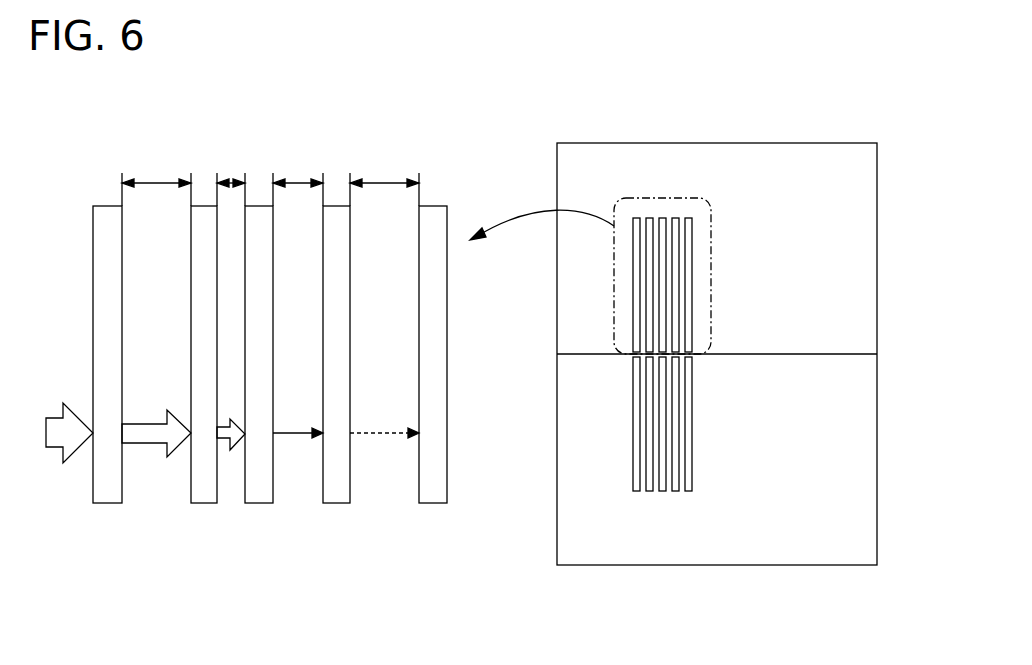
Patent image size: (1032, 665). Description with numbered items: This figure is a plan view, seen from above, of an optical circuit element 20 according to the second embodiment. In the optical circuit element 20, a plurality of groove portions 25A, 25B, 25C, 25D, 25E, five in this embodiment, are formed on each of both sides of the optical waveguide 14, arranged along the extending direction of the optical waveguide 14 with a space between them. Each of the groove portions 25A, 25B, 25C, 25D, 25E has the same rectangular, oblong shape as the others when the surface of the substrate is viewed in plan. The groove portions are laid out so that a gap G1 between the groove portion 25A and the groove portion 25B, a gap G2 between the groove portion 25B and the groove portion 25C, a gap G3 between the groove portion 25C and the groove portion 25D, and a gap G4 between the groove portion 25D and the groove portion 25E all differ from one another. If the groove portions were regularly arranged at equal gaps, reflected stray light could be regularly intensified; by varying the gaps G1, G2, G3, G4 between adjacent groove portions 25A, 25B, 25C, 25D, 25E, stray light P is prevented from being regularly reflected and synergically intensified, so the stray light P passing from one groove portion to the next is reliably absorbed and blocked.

The optical circuit element 20 is at (781, 121).
The optical waveguide 14 is at (832, 353).
The groove portion 25A is at (108, 503).
The groove portion 25B is at (204, 503).
The groove portion 25C is at (259, 503).
The groove portion 25D is at (337, 503).
The groove portion 25E is at (432, 503).
The stray light P is at (56, 418).
The gap G1 is at (156, 180).
The gap G2 is at (231, 180).
The gap G3 is at (298, 180).
The gap G4 is at (384, 180).